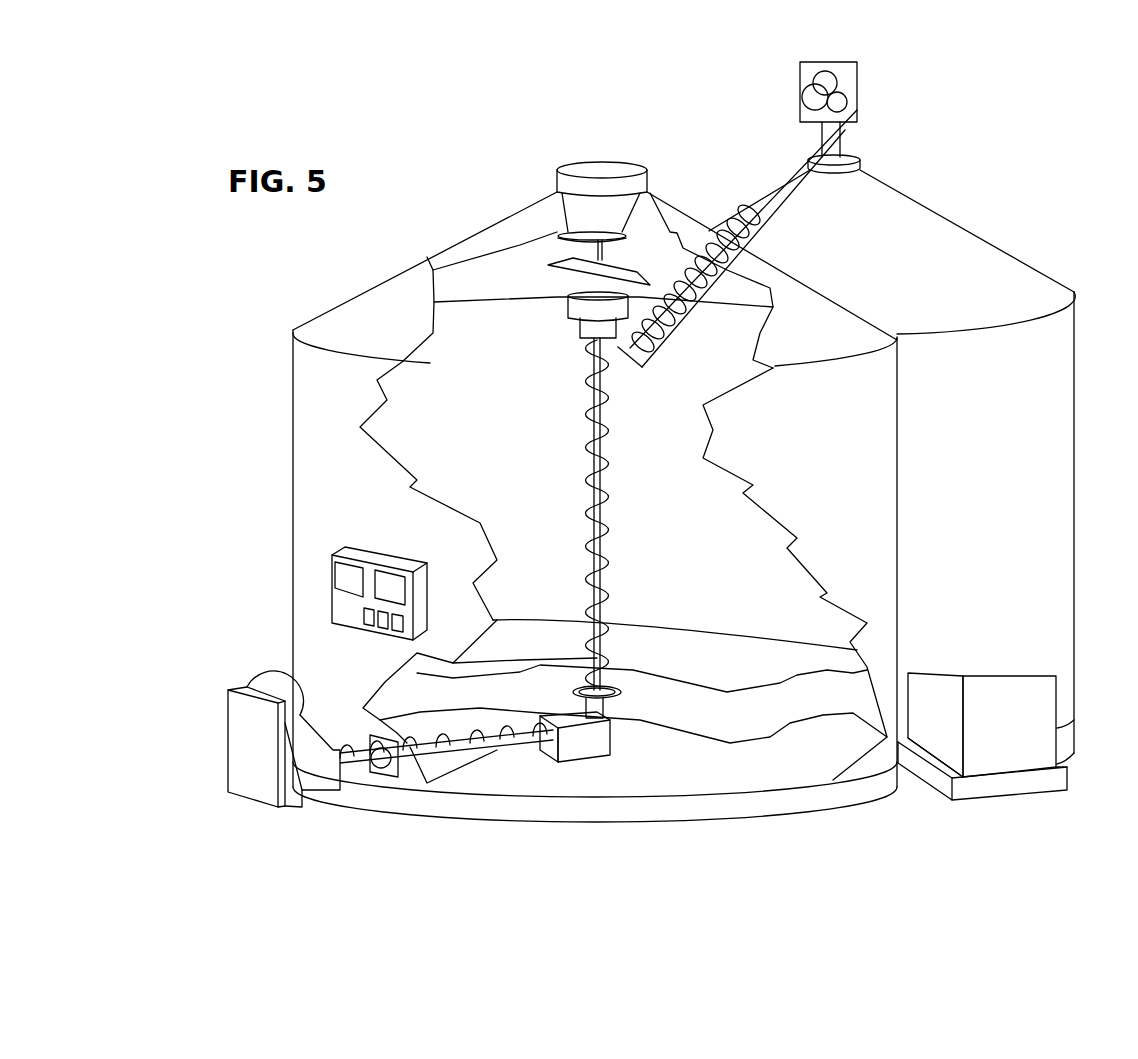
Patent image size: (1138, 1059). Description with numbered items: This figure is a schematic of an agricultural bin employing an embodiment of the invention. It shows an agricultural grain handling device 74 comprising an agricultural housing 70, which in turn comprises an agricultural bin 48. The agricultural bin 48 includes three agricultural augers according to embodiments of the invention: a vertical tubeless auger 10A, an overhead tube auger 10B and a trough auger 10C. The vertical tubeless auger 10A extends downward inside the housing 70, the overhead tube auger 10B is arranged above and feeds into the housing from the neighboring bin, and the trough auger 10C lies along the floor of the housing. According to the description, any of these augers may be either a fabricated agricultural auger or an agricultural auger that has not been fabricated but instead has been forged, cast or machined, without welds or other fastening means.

The agricultural housing 70 is at (424, 248).
The agricultural bin 48 is at (1040, 163).
The agricultural grain handling device 74 is at (948, 57).
The vertical tubeless auger 10A is at (575, 425).
The overhead tube auger 10B is at (778, 155).
The trough auger 10C is at (550, 764).